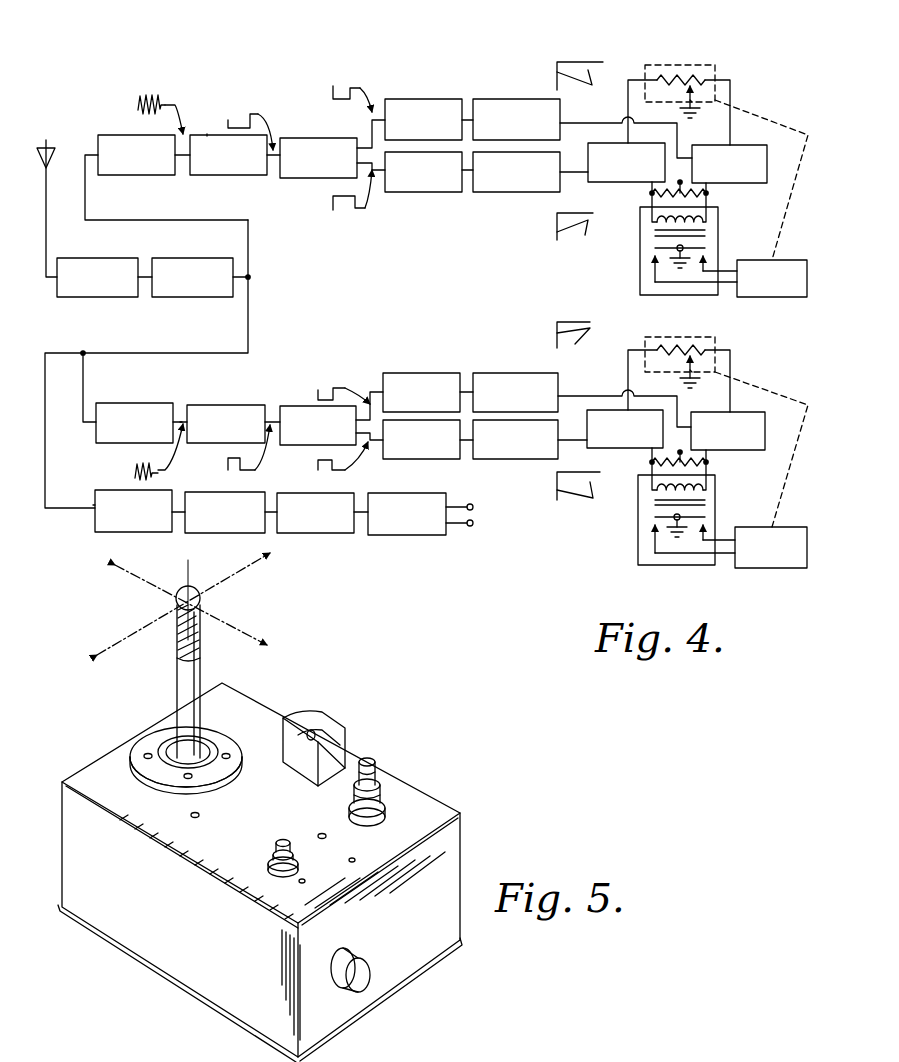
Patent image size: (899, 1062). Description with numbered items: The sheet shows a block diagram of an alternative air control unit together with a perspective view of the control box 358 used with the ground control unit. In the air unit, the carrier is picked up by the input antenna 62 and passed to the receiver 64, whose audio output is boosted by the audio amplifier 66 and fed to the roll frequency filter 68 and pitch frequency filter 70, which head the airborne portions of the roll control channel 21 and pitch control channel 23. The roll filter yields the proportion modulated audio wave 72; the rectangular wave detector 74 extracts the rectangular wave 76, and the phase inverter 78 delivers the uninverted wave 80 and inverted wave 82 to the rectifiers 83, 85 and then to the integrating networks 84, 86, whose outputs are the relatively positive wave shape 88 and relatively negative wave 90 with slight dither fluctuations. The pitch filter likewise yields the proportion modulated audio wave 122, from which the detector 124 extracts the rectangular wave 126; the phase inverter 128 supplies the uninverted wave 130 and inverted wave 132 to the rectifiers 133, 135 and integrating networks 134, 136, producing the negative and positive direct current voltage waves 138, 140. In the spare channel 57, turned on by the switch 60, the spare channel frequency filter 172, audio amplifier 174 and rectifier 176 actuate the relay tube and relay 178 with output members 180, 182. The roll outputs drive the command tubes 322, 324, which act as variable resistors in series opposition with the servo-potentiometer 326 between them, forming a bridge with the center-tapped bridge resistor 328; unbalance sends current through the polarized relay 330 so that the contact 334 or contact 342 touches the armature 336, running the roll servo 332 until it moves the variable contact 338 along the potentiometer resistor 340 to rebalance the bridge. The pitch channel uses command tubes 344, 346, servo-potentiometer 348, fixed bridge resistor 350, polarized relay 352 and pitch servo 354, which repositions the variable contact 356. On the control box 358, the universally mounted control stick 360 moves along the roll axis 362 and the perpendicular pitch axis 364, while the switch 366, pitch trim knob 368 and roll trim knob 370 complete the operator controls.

In FIG. 4, the roll control channel 21 is at (207, 133).
In FIG. 4, the pitch control channel 23 is at (180, 400).
In FIG. 4, the spare channel 57 is at (93, 500).
In FIG. 5, the spare channel on-off switch 60 is at (276, 848).
In FIG. 4, the air control unit input antenna 62 is at (46, 147).
In FIG. 4, the receiver 64 is at (95, 253).
In FIG. 4, the audio amplifier 66 is at (195, 251).
In FIG. 4, the roll frequency filter 68 is at (108, 135).
In FIG. 4, the pitch frequency filter 70 is at (122, 397).
In FIG. 4, the proportion modulated audio wave 72 is at (152, 96).
In FIG. 4, the rectangular wave detector 74 is at (230, 175).
In FIG. 4, the rectangular wave 76 is at (250, 114).
In FIG. 4, the phase inverter 78 is at (305, 138).
In FIG. 4, the uninverted wave 80 is at (333, 210).
In FIG. 4, the inverted wave 82 is at (358, 80).
In FIG. 4, the rectifier 83 is at (424, 192).
In FIG. 4, the integrating network 84 is at (508, 192).
In FIG. 4, the rectifier 85 is at (423, 99).
In FIG. 4, the integrating network 86 is at (503, 99).
In FIG. 4, the wave shape 88 is at (572, 178).
In FIG. 4, the wave 90 is at (575, 122).
In FIG. 4, the proportion modulated audio wave 122 is at (135, 470).
In FIG. 4, the detector 124 is at (216, 405).
In FIG. 4, the rectangular wave 126 is at (228, 466).
In FIG. 4, the phase inverter 128 is at (300, 406).
In FIG. 4, the uninverted wave 130 is at (318, 466).
In FIG. 4, the inverted wave 132 is at (333, 388).
In FIG. 4, the rectifier 133 is at (406, 459).
In FIG. 4, the integrating network 134 is at (520, 459).
In FIG. 4, the rectifier 135 is at (415, 373).
In FIG. 4, the integrating network 136 is at (507, 364).
In FIG. 4, the direct current voltage wave 138 is at (565, 443).
In FIG. 4, the direct current voltage wave 140 is at (570, 394).
In FIG. 4, the spare channel frequency filter 172 is at (95, 525).
In FIG. 4, the audio amplifier 174 is at (250, 492).
In FIG. 4, the rectifier 176 is at (335, 493).
In FIG. 4, the relay tube and relay 178 is at (420, 535).
In FIG. 4, the output member 180 is at (473, 525).
In FIG. 4, the output member 182 is at (473, 505).
In FIG. 4, the command tube 322 is at (636, 182).
In FIG. 4, the command tube 324 is at (726, 183).
In FIG. 4, the servo-potentiometer 326 is at (715, 66).
In FIG. 4, the center-tapped bridge resistor 328 is at (652, 193).
In FIG. 4, the polarized relay 330 is at (718, 216).
In FIG. 4, the roll servo 332 is at (778, 297).
In FIG. 4, the contact 334 is at (705, 268).
In FIG. 4, the armature 336 is at (655, 250).
In FIG. 4, the variable contact 338 is at (695, 100).
In FIG. 4, the potentiometer resistor 340 is at (678, 80).
In FIG. 4, the contact 342 is at (655, 282).
In FIG. 4, the command tube 344 is at (610, 410).
In FIG. 4, the command tube 346 is at (738, 412).
In FIG. 4, the servo-potentiometer 348 is at (680, 332).
In FIG. 4, the center-tapped fixed bridge resistor 350 is at (706, 462).
In FIG. 4, the polarized relay 352 is at (638, 528).
In FIG. 4, the pitch servo 354 is at (780, 568).
In FIG. 4, the variable contact 356 is at (692, 372).
In FIG. 5, the control box 358 is at (440, 803).
In FIG. 5, the control stick 360 is at (177, 693).
In FIG. 5, the roll axis 362 is at (150, 585).
In FIG. 5, the pitch axis 364 is at (222, 583).
In FIG. 5, the switch 366 is at (375, 763).
In FIG. 5, the pitch trim knob 368 is at (365, 968).
In FIG. 5, the roll trim knob 370 is at (349, 810).